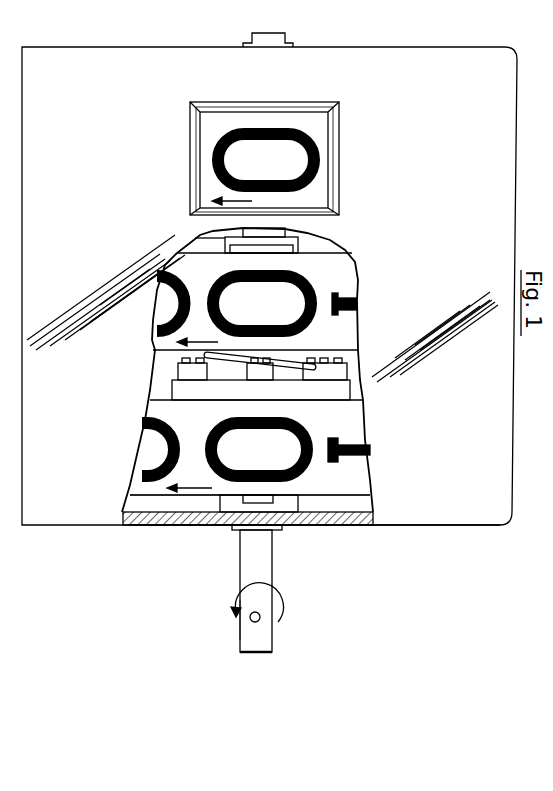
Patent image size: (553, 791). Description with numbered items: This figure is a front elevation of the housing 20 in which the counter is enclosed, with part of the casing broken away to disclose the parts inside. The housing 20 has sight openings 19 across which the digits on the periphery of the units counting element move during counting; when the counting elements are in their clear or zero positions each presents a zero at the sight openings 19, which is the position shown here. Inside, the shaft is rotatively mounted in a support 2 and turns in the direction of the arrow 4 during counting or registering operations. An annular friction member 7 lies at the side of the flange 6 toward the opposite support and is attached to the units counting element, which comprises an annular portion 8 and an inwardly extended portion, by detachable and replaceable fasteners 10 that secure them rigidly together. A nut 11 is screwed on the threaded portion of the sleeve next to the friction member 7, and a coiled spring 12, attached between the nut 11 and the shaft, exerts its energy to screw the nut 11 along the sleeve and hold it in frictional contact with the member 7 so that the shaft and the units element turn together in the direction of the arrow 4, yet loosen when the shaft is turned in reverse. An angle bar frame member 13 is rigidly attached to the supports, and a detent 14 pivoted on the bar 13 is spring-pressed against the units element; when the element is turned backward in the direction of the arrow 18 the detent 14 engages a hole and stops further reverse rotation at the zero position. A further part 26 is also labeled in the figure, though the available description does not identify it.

The support 2 is at (178, 518).
The arrow 4 is at (262, 588).
The flange 6 is at (201, 392).
The annular friction member 7 is at (229, 372).
The annular portion 8 is at (332, 488).
The fastener 10 is at (179, 366).
The nut 11 is at (248, 634).
The coiled spring 12 is at (345, 270).
The angle bar frame member 13 is at (172, 47).
The detent 14 is at (208, 135).
The arrow 18 is at (301, 363).
The sight opening 19 is at (331, 133).
The housing 20 is at (423, 523).
The top bracket 26 is at (211, 238).